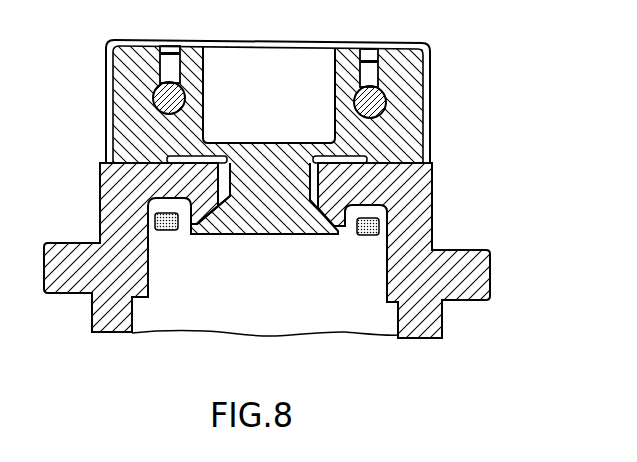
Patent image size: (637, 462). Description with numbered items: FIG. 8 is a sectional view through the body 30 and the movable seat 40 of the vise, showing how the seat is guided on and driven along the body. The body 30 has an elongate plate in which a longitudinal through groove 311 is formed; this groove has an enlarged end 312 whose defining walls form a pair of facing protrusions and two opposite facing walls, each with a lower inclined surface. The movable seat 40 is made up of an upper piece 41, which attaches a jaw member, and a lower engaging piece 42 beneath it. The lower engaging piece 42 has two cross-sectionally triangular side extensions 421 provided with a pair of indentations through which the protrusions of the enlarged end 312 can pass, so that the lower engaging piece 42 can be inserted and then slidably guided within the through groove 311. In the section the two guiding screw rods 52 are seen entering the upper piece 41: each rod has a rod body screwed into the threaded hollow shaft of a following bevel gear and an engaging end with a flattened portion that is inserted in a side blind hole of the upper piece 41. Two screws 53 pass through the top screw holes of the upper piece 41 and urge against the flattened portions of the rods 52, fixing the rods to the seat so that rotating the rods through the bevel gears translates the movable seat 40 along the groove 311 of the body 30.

The body 30 is at (492, 267).
The longitudinal through groove 311 is at (222, 186).
The enlarged end 312 is at (358, 192).
The movable seat 40 is at (412, 82).
The upper piece 41 is at (264, 194).
The lower engaging piece 42 is at (271, 200).
The side extensions 421 is at (219, 210).
The guiding screw rods 52 is at (386, 106).
The screws 53 is at (370, 70).